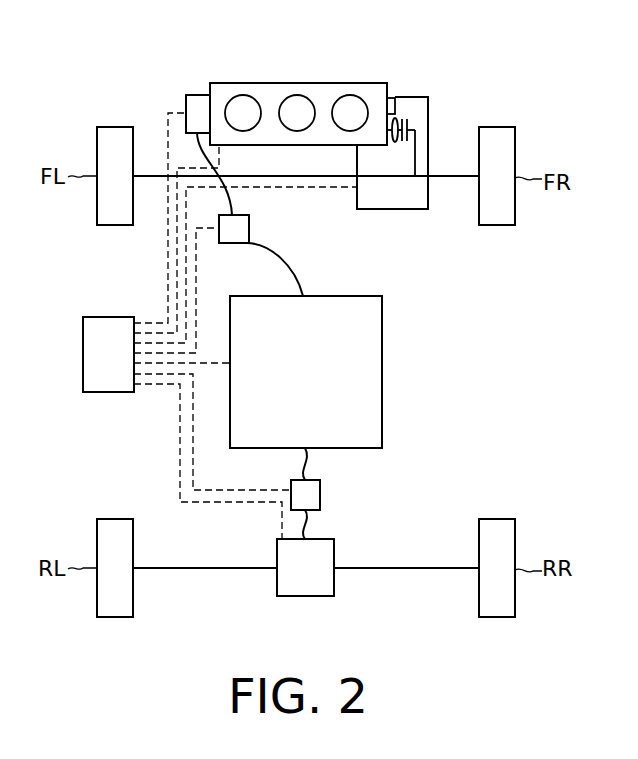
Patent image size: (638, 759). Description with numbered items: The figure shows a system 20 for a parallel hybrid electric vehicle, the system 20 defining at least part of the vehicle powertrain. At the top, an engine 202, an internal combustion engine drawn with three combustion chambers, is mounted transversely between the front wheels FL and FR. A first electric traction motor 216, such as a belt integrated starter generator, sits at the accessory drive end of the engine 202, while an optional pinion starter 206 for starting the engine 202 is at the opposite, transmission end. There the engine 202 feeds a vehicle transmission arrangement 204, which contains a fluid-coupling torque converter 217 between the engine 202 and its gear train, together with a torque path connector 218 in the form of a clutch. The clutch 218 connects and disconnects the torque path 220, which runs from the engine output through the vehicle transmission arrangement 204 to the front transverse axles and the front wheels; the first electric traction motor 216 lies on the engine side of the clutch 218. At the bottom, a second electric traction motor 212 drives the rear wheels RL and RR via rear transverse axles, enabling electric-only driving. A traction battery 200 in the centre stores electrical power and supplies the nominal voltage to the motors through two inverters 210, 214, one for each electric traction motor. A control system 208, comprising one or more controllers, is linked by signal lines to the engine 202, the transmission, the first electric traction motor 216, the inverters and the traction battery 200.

The system 20 is at (484, 79).
The traction battery 200 is at (383, 368).
The engine 202 is at (263, 83).
The vehicle transmission arrangement 204 is at (397, 210).
The pinion starter 206 is at (392, 98).
The control system 208 is at (83, 360).
The inverter 210 is at (321, 496).
The second electric traction motor 212 is at (306, 598).
The inverter 214 is at (228, 244).
The first electric traction motor 216 is at (196, 95).
The fluid-coupling torque converter 217 is at (398, 125).
The torque path connector 218 is at (408, 128).
The torque path 220 is at (333, 189).